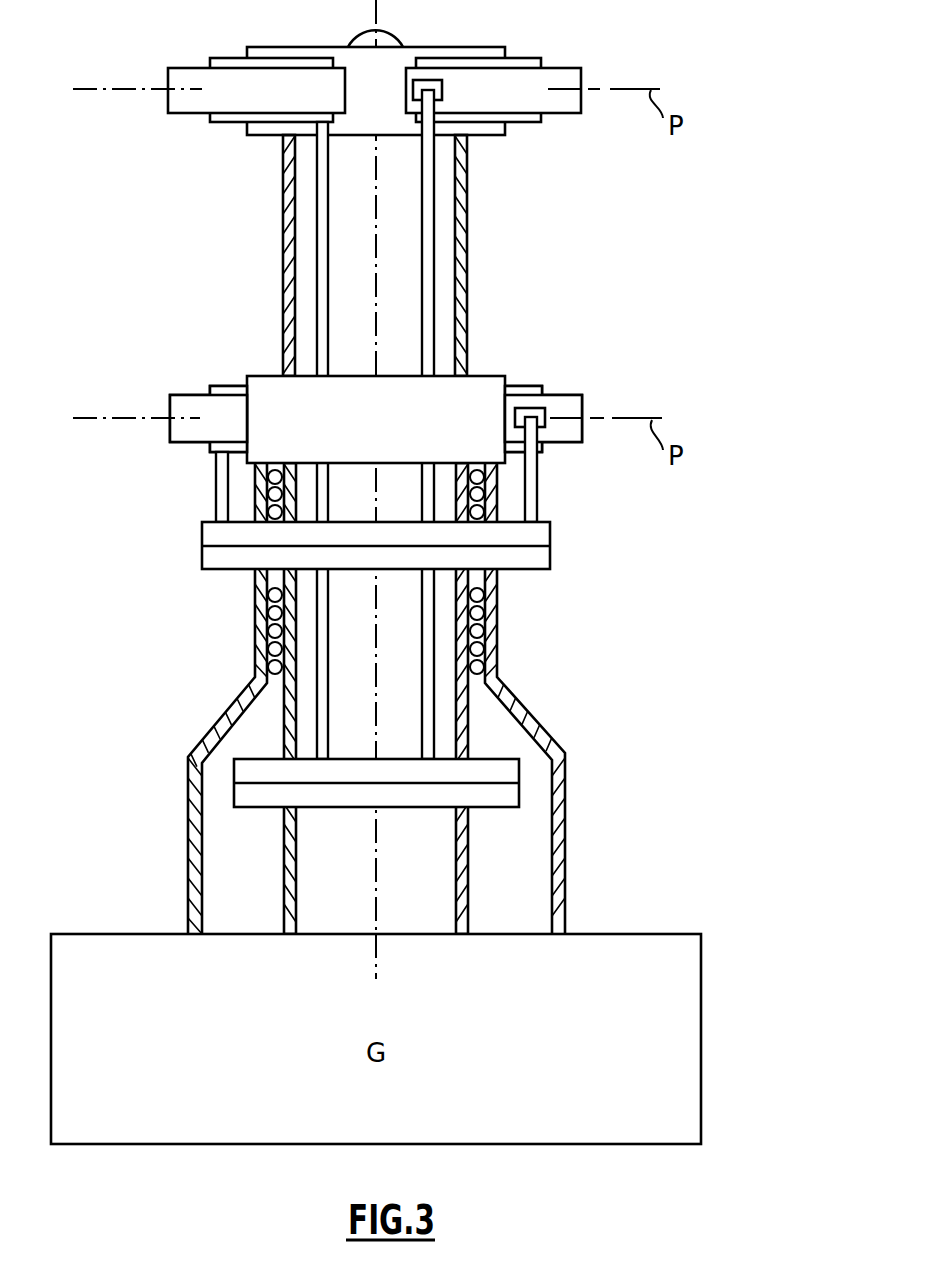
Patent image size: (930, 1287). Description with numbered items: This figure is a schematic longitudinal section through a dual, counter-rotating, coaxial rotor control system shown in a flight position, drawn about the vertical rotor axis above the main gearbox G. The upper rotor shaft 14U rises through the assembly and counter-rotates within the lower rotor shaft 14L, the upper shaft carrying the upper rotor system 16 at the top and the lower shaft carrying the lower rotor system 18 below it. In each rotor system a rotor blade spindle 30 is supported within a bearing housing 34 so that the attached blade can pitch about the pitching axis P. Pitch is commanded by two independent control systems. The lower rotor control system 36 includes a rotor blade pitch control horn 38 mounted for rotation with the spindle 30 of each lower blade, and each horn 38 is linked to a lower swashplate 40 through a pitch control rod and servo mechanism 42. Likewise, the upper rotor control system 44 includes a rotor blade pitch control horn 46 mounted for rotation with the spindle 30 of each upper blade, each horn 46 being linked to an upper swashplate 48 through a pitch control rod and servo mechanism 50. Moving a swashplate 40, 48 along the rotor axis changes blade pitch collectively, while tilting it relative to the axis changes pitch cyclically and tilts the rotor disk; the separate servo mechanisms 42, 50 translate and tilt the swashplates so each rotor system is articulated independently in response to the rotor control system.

The upper rotor shaft 14U is at (467, 218).
The lower rotor shaft 14L is at (565, 777).
The upper rotor system 16 is at (428, 229).
The lower rotor system 18 is at (461, 438).
The rotor blade spindle 30 is at (512, 78).
The bearing housing 34 is at (283, 62).
The lower rotor control system 36 is at (434, 557).
The rotor blade pitch control horn 38 is at (540, 412).
The lower swashplate 40 is at (525, 562).
The pitch control rod and servo mechanism 42 is at (537, 492).
The upper rotor control system 44 is at (374, 698).
The rotor blade pitch control horn 46 is at (440, 82).
The upper swashplate 48 is at (260, 800).
The pitch control rod and servo mechanism 50 is at (434, 296).